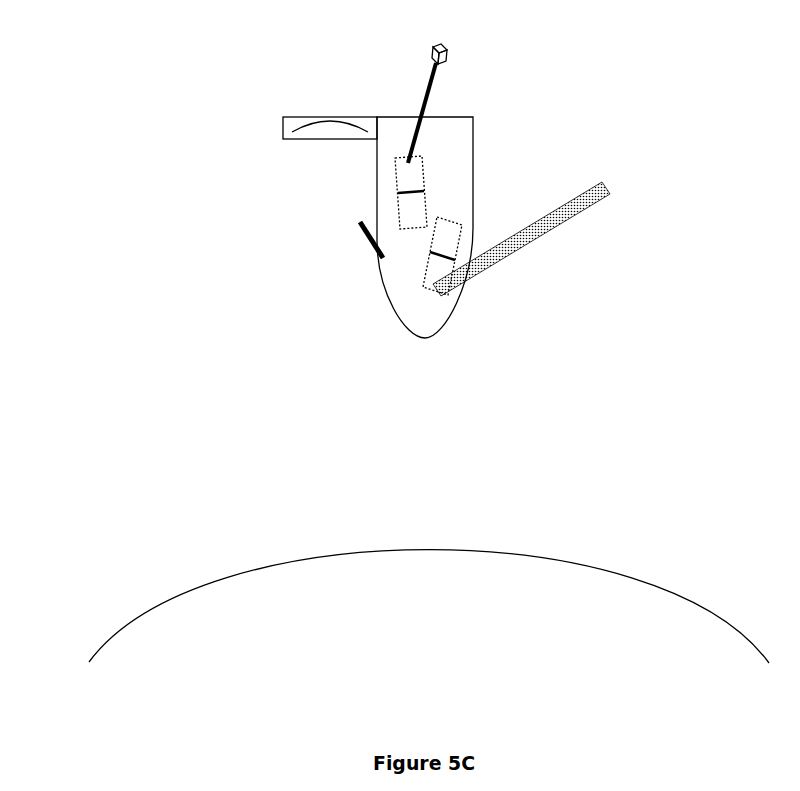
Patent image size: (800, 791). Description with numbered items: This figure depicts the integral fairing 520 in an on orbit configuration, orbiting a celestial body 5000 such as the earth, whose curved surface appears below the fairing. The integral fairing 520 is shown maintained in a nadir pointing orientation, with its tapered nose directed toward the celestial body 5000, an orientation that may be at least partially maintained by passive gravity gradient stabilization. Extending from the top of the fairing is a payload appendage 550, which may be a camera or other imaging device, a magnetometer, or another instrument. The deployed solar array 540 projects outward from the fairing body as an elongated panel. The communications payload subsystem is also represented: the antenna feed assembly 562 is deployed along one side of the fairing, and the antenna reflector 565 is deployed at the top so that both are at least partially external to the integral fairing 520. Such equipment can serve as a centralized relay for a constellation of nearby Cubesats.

The integral fairing 520 is at (160, 62).
The antenna reflector 565 is at (296, 132).
The payload appendage 550 is at (445, 58).
The antenna feed assembly 562 is at (365, 220).
The solar array 540 is at (538, 230).
The celestial body 5000 is at (628, 573).